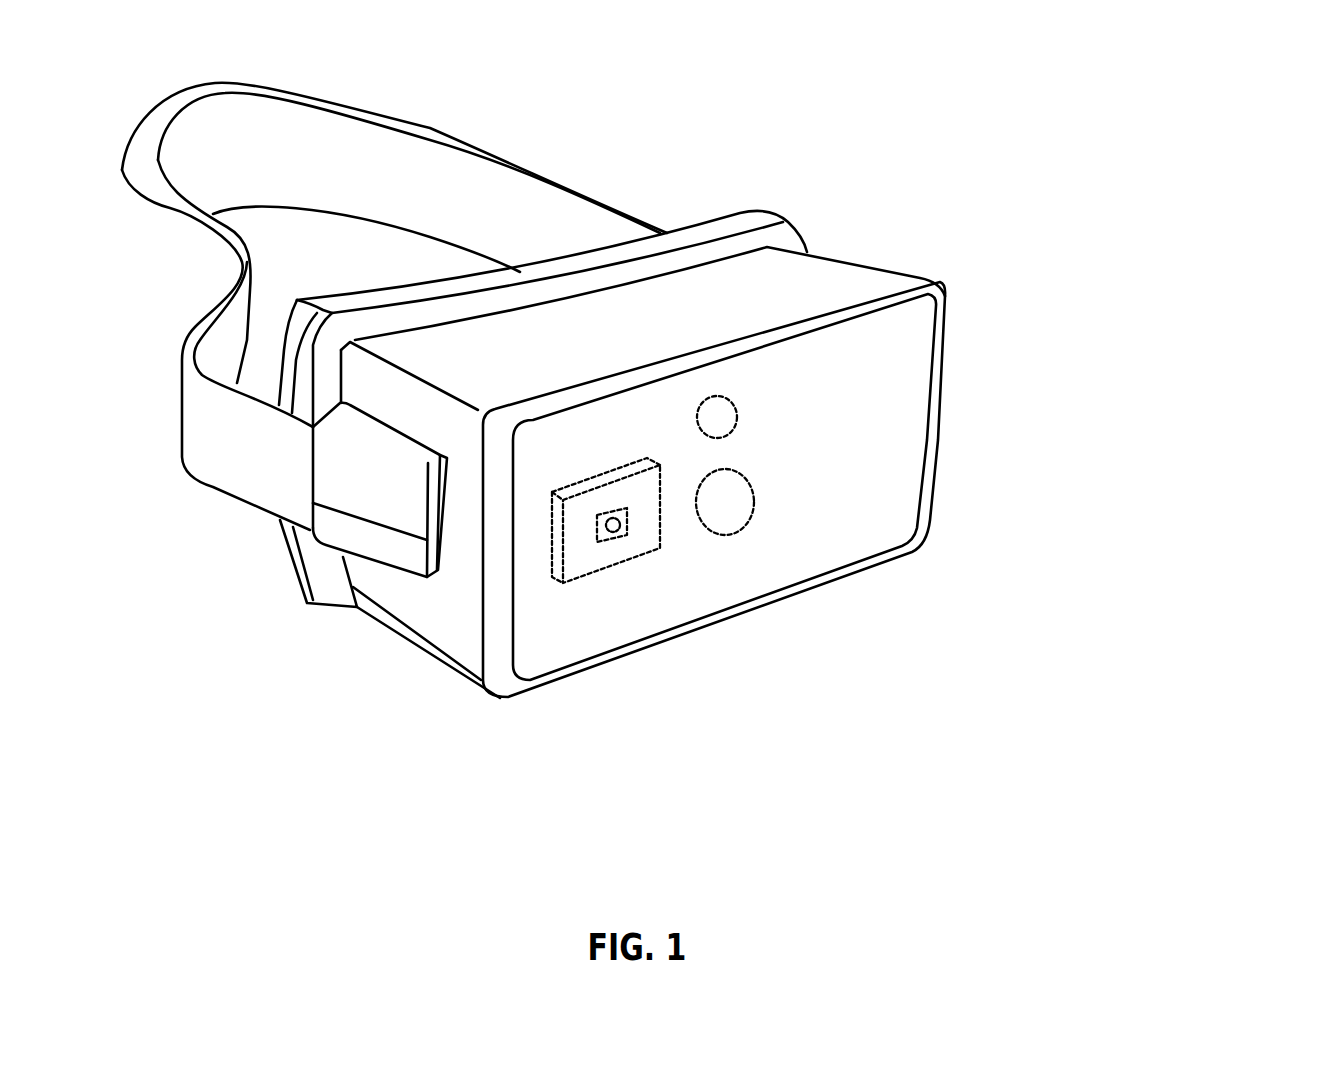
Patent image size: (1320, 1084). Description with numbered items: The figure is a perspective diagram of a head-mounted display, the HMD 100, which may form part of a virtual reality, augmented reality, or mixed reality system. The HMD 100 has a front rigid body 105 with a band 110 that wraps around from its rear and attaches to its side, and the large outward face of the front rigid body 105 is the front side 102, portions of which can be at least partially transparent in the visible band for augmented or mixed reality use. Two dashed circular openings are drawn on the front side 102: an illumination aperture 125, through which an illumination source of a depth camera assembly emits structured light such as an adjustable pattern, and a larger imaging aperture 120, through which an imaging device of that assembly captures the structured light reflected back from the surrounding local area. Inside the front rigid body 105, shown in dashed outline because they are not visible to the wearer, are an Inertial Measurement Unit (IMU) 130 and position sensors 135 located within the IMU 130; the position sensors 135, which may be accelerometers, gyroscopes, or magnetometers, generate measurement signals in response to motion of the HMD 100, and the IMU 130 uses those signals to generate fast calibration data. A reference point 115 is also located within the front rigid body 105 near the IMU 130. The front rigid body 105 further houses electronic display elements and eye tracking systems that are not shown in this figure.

The HMD 100 is at (1038, 64).
The front side 102 is at (838, 472).
The front rigid body 105 is at (940, 283).
The band 110 is at (543, 170).
The reference point 115 is at (613, 530).
The imaging aperture 120 is at (755, 500).
The illumination aperture 125 is at (730, 400).
The Inertial Measurement Unit (IMU) 130 is at (660, 537).
The position sensors 135 is at (598, 542).